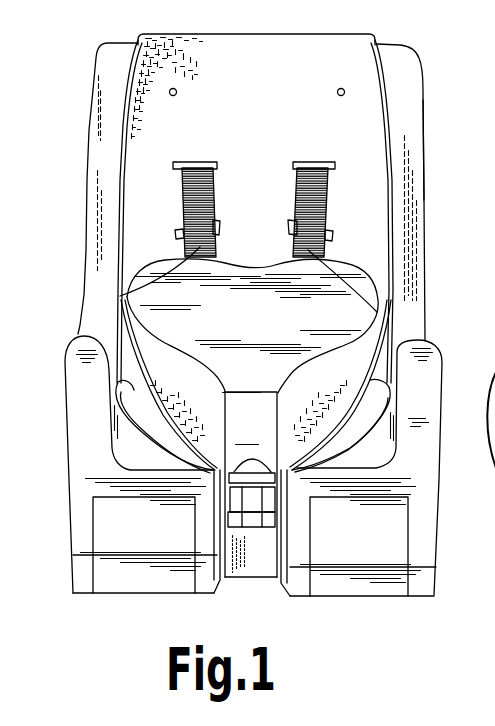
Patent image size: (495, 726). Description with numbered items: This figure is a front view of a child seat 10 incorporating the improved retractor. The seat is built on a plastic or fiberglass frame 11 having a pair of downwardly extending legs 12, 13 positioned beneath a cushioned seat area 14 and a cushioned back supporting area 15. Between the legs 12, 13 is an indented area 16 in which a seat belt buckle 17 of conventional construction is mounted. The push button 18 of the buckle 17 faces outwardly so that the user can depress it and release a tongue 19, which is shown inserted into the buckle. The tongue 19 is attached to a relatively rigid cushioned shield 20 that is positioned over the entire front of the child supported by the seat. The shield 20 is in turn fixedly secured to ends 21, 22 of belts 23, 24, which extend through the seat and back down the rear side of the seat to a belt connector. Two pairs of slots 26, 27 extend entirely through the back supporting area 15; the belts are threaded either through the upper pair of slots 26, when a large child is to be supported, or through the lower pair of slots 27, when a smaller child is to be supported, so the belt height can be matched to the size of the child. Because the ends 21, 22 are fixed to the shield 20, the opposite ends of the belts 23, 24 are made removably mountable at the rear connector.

The child seat 10 is at (432, 72).
The frame 11 is at (418, 117).
The leg 12 is at (163, 573).
The leg 13 is at (373, 587).
The cushioned seat area 14 is at (386, 383).
The cushioned back supporting area 15 is at (245, 95).
The indented area 16 is at (250, 586).
The seat belt buckle 17 is at (268, 503).
The push button 18 is at (237, 494).
The tongue 19 is at (248, 478).
The cushioned shield 20 is at (357, 285).
The belt end 21 is at (130, 297).
The belt end 22 is at (377, 313).
The belt 23 is at (195, 183).
The belt 24 is at (312, 183).
The slots 26 is at (218, 163).
The slots 27 is at (175, 232).